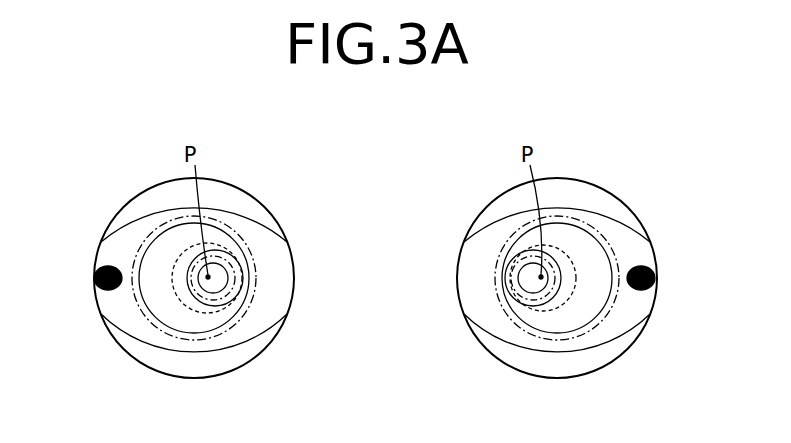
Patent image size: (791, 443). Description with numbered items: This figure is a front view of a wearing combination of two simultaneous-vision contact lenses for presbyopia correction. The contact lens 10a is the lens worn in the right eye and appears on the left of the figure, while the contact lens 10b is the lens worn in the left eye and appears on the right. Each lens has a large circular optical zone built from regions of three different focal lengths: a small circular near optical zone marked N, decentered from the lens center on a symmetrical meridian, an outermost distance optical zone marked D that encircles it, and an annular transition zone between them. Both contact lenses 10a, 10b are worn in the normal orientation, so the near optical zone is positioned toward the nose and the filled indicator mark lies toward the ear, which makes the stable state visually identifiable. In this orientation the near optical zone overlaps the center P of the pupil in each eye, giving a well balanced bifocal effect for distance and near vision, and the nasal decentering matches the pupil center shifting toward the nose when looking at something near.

The contact lens 10a is at (262, 182).
The contact lens 10b is at (620, 172).